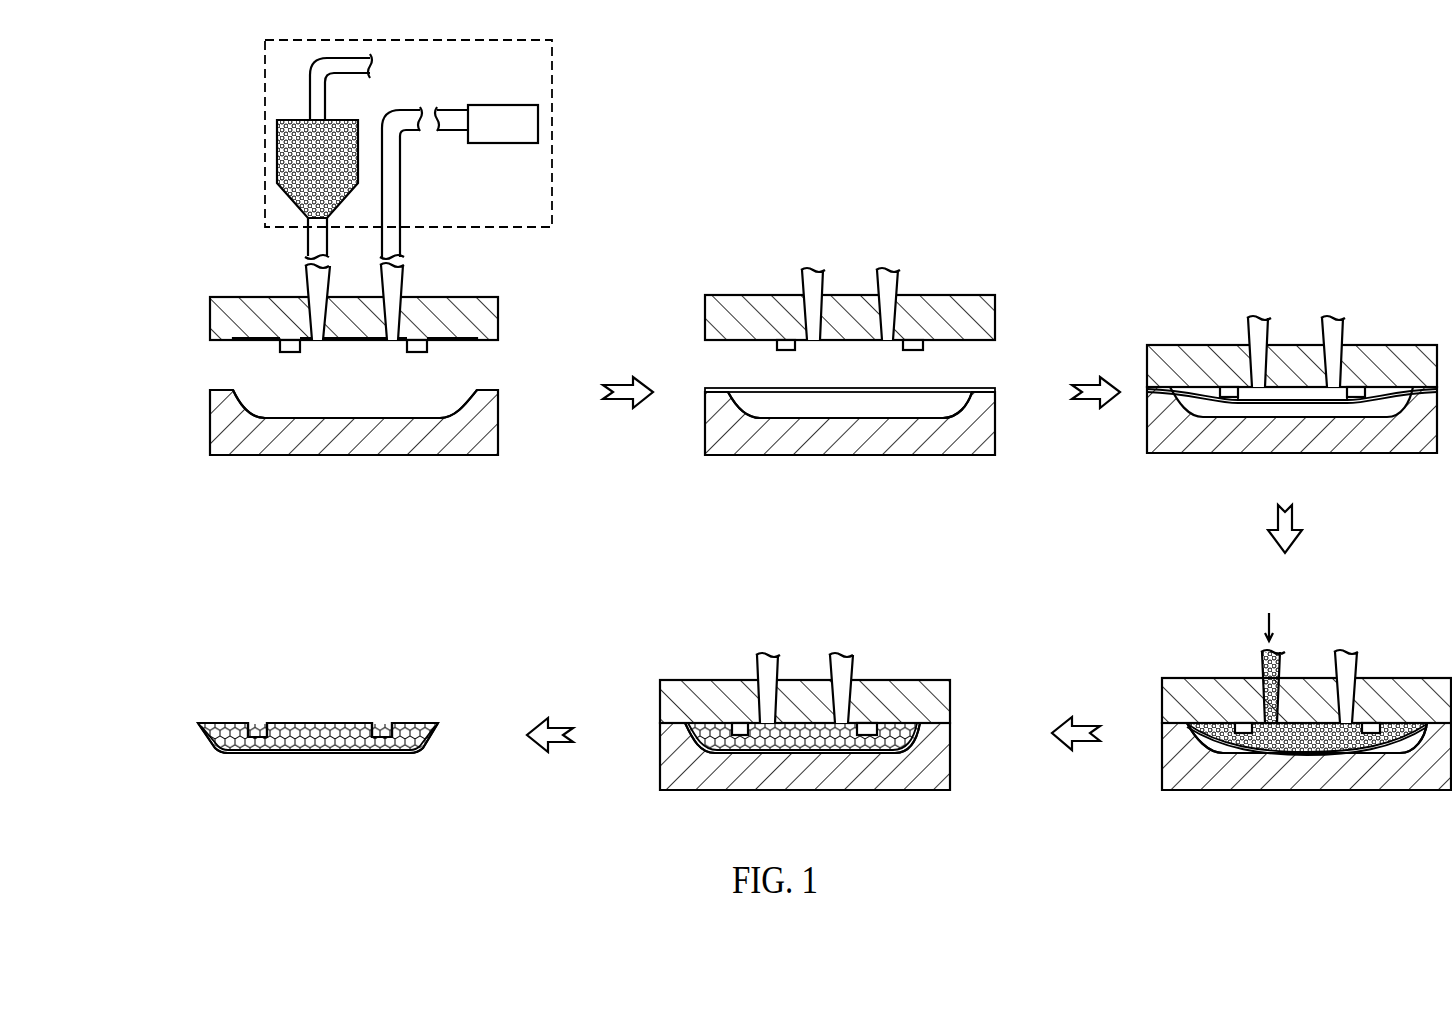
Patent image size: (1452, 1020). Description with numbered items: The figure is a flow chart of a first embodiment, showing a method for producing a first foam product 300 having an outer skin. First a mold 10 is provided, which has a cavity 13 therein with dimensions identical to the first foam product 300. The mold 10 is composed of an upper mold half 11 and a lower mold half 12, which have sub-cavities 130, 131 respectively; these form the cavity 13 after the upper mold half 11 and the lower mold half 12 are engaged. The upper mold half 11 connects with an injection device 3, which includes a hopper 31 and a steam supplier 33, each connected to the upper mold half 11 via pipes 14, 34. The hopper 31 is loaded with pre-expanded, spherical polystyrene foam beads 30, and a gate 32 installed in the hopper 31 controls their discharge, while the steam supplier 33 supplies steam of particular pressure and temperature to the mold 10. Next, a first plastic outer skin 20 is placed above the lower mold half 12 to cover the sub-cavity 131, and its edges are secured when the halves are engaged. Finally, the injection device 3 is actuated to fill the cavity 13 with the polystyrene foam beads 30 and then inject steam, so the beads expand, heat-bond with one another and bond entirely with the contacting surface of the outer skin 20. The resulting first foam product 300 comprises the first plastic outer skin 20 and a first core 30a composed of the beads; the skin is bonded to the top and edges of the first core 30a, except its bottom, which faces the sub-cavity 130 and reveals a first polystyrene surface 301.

The injection device 3 is at (546, 88).
The mold 10 is at (203, 447).
The upper mold half 11 is at (498, 307).
The lower mold half 12 is at (492, 423).
The cavity 13 is at (370, 382).
The sub-cavity 130 is at (447, 347).
The sub-cavity 131 is at (442, 398).
The pipe 14 is at (313, 285).
The first plastic outer skin 20 is at (908, 392).
The polystyrene foam beads 30 is at (302, 212).
The first core 30a is at (903, 727).
The hopper 31 is at (278, 163).
The gate 32 is at (306, 224).
The steam supplier 33 is at (477, 141).
The pipe 34 is at (399, 280).
The first foam product 300 is at (441, 742).
The first polystyrene surface 301 is at (348, 722).